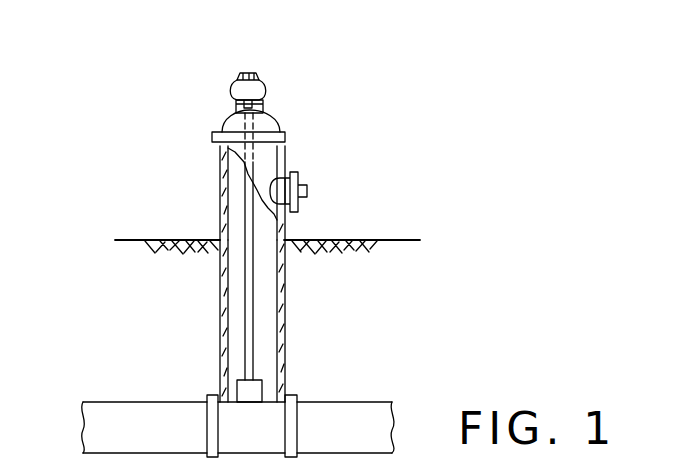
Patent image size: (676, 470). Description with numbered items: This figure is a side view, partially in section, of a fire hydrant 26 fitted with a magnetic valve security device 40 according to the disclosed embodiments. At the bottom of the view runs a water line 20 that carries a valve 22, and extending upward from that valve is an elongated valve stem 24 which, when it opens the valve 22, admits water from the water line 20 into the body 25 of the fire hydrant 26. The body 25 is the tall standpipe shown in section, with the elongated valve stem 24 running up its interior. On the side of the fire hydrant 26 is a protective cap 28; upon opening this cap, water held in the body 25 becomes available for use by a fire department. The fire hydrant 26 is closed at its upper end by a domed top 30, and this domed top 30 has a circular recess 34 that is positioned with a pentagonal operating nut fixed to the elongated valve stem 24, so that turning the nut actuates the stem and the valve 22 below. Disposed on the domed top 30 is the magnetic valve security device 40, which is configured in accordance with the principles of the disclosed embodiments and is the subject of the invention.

The water line 20 is at (352, 422).
The valve 22 is at (262, 418).
The elongated valve stem 24 is at (252, 333).
The body 25 is at (218, 193).
The fire hydrant 26 is at (272, 150).
The protective cap 28 is at (297, 177).
The domed top 30 is at (267, 120).
The circular recess 34 is at (267, 100).
The magnetic valve security device 40 is at (249, 70).